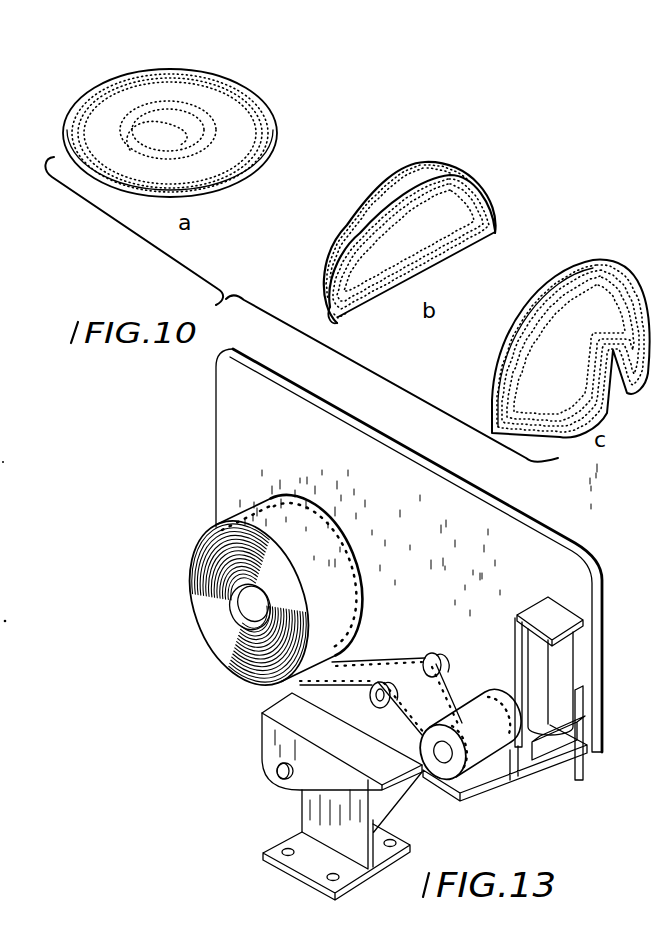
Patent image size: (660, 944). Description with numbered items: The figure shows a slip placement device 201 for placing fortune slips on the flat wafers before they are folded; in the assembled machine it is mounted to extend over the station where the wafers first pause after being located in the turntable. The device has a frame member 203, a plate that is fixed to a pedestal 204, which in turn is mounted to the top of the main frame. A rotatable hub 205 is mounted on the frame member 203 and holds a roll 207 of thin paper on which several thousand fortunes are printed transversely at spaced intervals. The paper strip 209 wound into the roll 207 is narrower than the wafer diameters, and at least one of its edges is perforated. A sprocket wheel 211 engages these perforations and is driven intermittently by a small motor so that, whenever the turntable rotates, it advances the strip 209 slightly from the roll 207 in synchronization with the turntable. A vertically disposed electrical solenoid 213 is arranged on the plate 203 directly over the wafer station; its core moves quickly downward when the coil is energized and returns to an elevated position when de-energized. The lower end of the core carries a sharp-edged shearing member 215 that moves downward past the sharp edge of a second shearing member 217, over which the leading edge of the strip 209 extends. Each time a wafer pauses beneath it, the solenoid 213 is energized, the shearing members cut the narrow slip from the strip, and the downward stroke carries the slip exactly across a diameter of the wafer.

The slip placement device 201 is at (206, 499).
The frame member 203 is at (378, 483).
The pedestal 204 is at (317, 821).
The rotatable hub 205 is at (244, 608).
The roll 207 is at (248, 598).
The paper strip 209 is at (378, 673).
The sprocket wheel 211 is at (441, 770).
The electrical solenoid 213 is at (566, 669).
The shearing member 215 is at (577, 733).
The second shearing member 217 is at (530, 795).